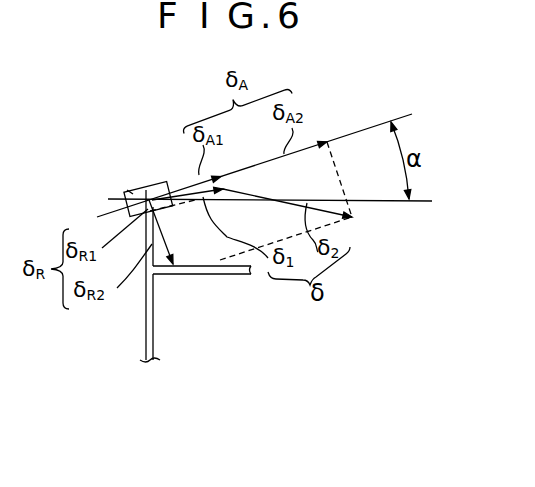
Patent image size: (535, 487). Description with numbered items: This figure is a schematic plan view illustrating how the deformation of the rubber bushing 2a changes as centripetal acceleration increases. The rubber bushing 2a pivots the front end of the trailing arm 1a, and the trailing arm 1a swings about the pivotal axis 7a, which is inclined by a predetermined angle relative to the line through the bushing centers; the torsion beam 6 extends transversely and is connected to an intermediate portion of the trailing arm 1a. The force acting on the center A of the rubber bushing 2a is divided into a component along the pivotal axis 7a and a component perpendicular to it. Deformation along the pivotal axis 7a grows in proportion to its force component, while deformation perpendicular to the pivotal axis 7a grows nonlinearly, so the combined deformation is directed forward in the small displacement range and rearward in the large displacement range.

The pivotal axis 7a is at (106, 212).
The rubber bushing 2a is at (153, 182).
The center of the rubber bushing A is at (130, 191).
The trailing arm 1a is at (153, 327).
The torsion beam 6 is at (224, 277).